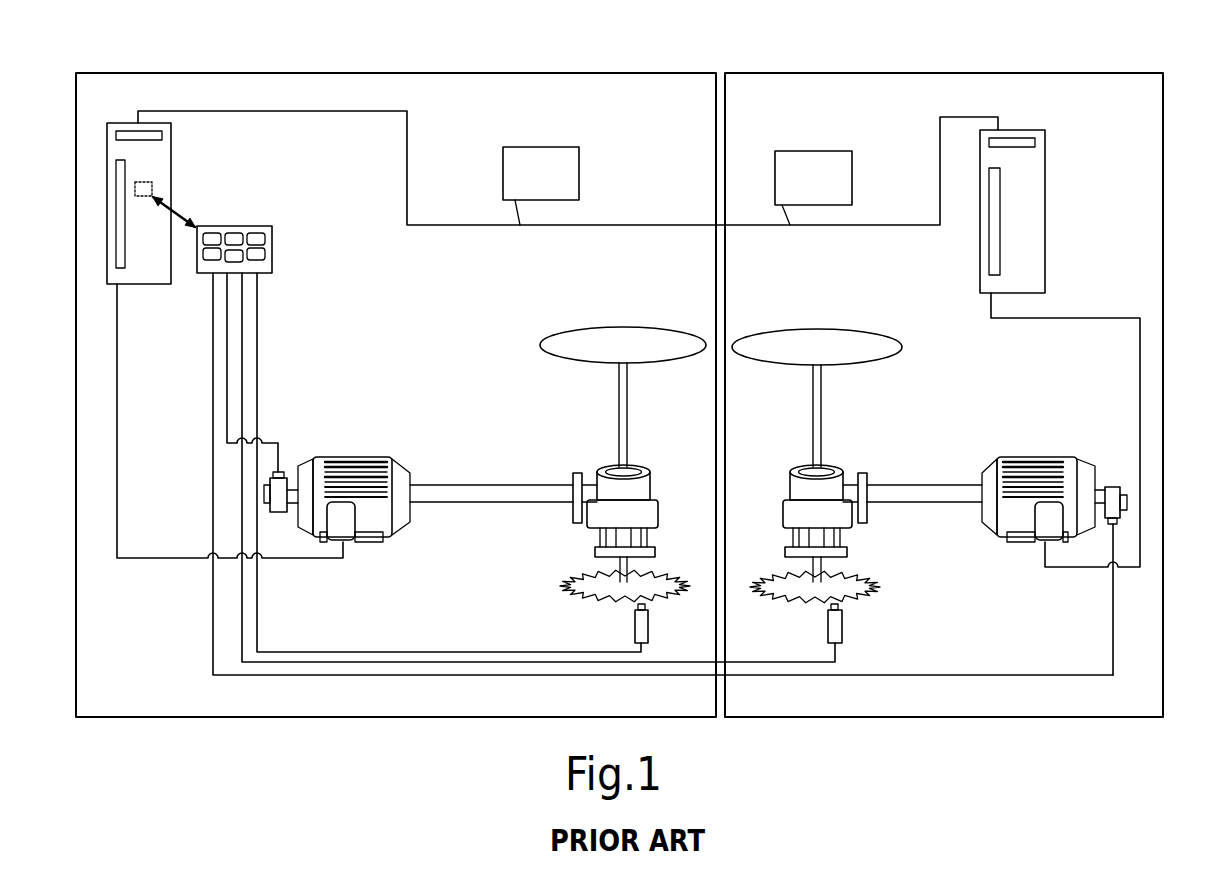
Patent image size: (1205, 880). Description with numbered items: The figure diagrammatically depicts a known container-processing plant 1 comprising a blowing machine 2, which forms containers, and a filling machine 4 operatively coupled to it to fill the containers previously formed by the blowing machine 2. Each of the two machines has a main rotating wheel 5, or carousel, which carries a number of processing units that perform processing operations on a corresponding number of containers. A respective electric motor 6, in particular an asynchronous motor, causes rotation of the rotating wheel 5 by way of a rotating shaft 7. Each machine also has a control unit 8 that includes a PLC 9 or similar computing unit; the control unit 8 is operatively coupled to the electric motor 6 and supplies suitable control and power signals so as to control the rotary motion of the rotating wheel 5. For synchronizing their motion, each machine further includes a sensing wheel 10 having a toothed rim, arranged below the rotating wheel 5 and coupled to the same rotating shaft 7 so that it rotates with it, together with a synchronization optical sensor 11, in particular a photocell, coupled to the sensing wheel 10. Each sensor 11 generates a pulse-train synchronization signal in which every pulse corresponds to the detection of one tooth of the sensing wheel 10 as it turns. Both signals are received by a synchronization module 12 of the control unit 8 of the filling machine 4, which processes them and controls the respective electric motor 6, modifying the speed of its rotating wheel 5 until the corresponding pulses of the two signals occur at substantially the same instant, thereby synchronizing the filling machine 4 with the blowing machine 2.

The container-processing plant 1 is at (1138, 58).
The blowing machine 2 is at (862, 718).
The filling machine 4 is at (395, 720).
The main rotating wheel 5 is at (567, 333).
The electric motor 6 is at (353, 455).
The rotating shaft 7 is at (618, 435).
The control unit 8 is at (163, 158).
The PLC 9 is at (567, 177).
The sensing wheel 10 is at (578, 575).
The synchronization optical sensor 11 is at (635, 625).
The synchronization module 12 is at (265, 268).